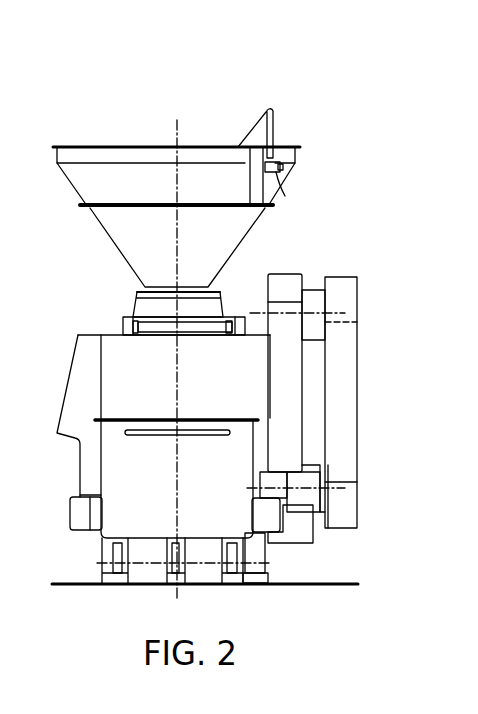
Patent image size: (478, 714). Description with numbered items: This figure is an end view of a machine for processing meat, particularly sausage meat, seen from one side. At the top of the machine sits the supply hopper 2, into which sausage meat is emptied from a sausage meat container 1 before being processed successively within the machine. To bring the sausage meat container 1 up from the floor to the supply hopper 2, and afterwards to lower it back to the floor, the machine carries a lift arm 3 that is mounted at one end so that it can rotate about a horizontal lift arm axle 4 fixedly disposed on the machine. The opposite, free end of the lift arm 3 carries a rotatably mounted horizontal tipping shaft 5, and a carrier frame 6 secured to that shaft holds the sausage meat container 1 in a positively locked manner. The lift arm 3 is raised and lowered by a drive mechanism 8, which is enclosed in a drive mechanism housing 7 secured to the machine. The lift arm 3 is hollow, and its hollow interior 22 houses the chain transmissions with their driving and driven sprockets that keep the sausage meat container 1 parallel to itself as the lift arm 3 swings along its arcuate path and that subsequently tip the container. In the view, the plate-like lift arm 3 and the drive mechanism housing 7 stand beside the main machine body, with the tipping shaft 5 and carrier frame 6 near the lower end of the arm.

The sausage meat container 1 is at (164, 500).
The supply hopper 2 is at (115, 183).
The lift arm 3 is at (366, 343).
The lift arm axle 4 is at (312, 302).
The tipping shaft 5 is at (297, 497).
The carrier frame 6 is at (273, 513).
The drive mechanism housing 7 is at (315, 416).
The drive mechanism 8 is at (291, 456).
The hollow interior 22 is at (342, 467).